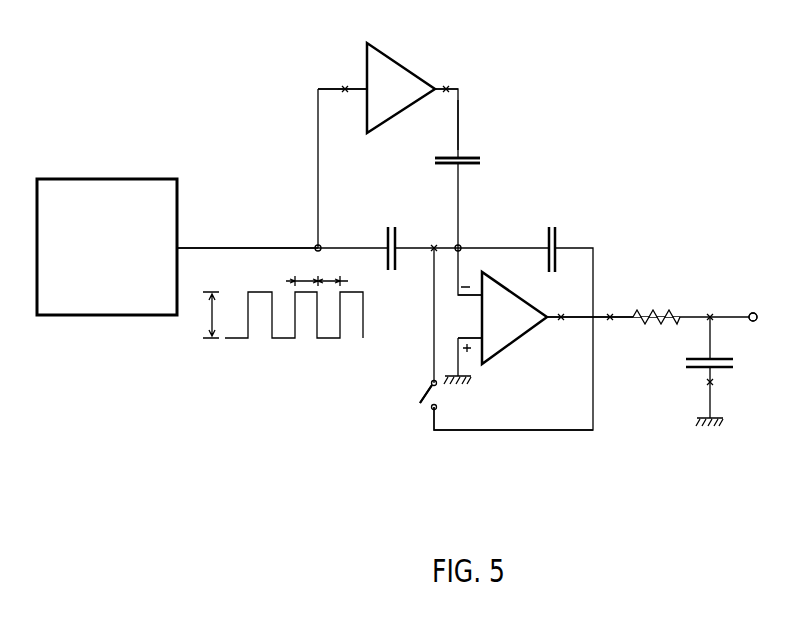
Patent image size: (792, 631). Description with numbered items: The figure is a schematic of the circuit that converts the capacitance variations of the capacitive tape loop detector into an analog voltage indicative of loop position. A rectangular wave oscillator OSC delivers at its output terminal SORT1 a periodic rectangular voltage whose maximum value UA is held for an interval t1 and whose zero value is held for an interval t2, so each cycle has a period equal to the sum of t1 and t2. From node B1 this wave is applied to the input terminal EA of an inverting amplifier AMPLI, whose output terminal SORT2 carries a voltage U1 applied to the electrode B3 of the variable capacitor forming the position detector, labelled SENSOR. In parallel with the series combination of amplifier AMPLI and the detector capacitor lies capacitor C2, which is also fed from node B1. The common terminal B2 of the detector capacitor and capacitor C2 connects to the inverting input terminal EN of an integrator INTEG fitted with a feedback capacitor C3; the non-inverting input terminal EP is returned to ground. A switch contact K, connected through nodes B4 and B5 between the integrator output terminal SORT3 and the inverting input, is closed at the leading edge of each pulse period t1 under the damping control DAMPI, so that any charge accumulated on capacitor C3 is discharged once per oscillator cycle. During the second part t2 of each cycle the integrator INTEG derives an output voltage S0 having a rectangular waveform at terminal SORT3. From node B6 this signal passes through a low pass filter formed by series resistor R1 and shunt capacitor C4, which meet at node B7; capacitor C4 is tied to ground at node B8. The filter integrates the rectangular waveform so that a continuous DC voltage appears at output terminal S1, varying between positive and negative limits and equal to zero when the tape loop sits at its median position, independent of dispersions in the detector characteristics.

The rectangular wave oscillator OSC is at (107, 247).
The oscillator output terminal SORT1 is at (247, 259).
The maximum oscillator voltage UA is at (283, 315).
The first interval t1 is at (302, 272).
The second interval t2 is at (333, 272).
The node B1 is at (322, 246).
The inverting amplifier AMPLI is at (392, 53).
The amplifier input terminal EA is at (343, 87).
The amplifier output terminal SORT2 is at (447, 87).
The amplifier output voltage U1 is at (440, 125).
The electrode of variable capacitor B3 is at (479, 155).
The variable capacitor (sensor) SENSOR is at (505, 161).
The capacitor C2 is at (422, 289).
The common terminal B2 is at (440, 236).
The feedback capacitor C3 is at (557, 236).
The integrator INTEG is at (553, 371).
The inverting input terminal EN is at (480, 296).
The non-inverting input terminal EP is at (480, 328).
The integrator output terminal SORT3 is at (563, 320).
The node B4 is at (418, 315).
The switch contact K is at (419, 403).
The damping control DAMPI is at (417, 430).
The node B5 is at (512, 441).
The node B6 is at (611, 304).
The integrator output voltage S0 is at (613, 334).
The series resistor R1 is at (656, 306).
The node B7 is at (708, 304).
The output terminal S1 is at (755, 304).
The shunt capacitor C4 is at (722, 371).
The node B8 is at (706, 385).